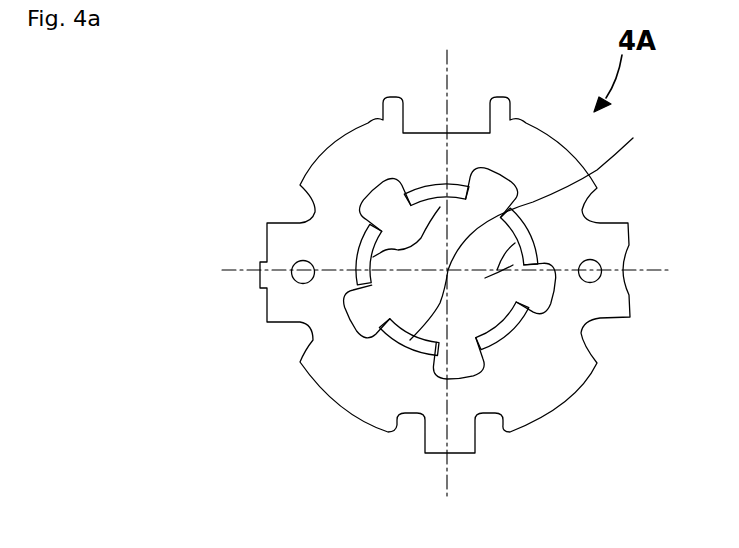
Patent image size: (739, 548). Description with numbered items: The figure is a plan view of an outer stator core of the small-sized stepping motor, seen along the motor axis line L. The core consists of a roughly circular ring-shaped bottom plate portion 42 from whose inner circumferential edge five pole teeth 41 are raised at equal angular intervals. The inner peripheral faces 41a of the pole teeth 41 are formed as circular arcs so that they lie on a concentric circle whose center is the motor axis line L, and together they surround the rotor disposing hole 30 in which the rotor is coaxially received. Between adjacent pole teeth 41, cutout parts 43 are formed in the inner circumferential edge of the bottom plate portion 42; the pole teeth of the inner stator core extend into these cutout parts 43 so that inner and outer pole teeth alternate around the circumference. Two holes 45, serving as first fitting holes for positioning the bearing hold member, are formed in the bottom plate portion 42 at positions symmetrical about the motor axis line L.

The pole teeth 41 is at (438, 200).
The inner peripheral faces 41a is at (448, 273).
The bottom plate portion 42 is at (617, 242).
The cutout parts 43 is at (380, 205).
The holes 45 is at (294, 280).
The rotor disposing hole 30 is at (420, 312).
The motor axis line L is at (531, 226).